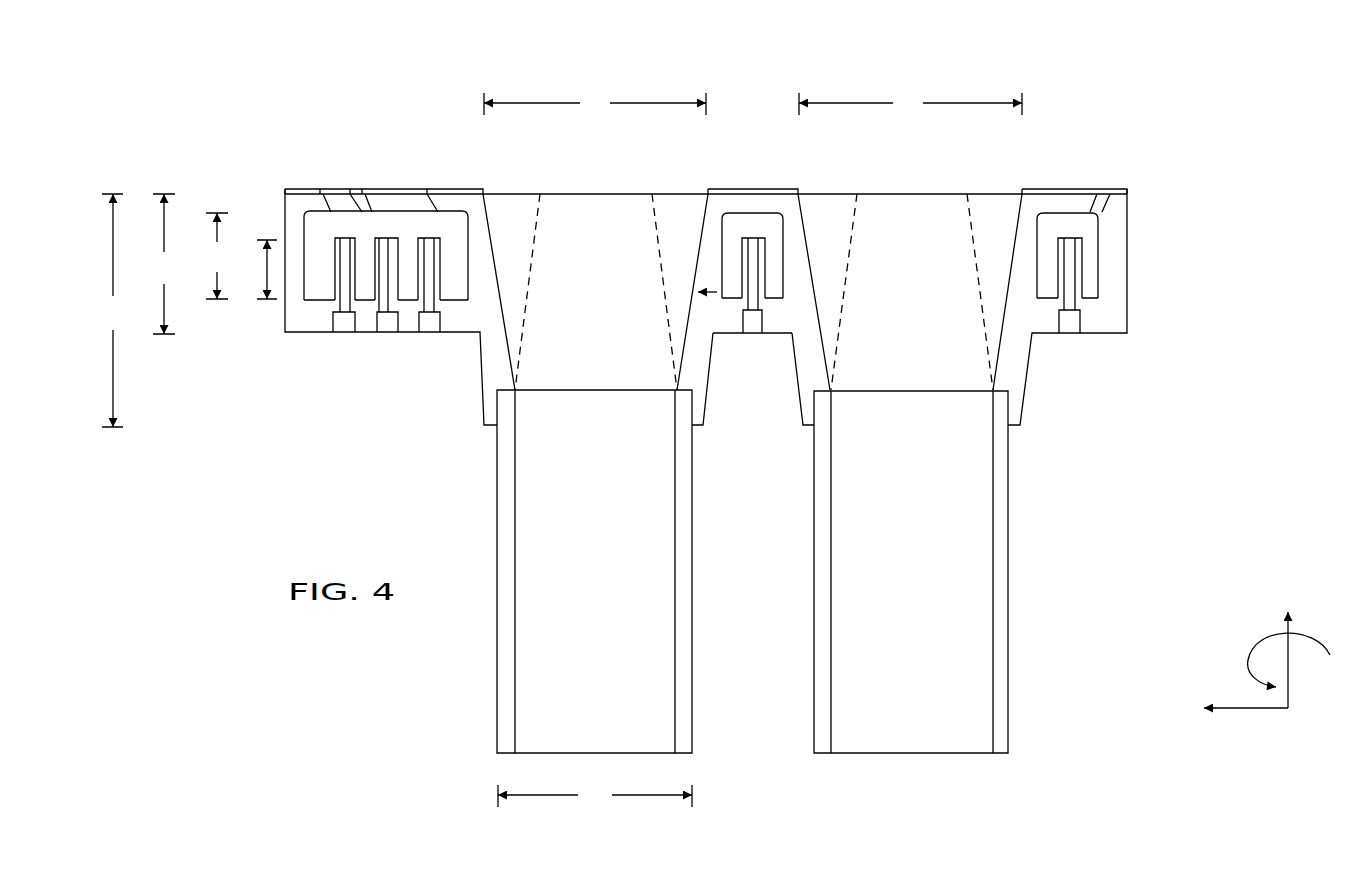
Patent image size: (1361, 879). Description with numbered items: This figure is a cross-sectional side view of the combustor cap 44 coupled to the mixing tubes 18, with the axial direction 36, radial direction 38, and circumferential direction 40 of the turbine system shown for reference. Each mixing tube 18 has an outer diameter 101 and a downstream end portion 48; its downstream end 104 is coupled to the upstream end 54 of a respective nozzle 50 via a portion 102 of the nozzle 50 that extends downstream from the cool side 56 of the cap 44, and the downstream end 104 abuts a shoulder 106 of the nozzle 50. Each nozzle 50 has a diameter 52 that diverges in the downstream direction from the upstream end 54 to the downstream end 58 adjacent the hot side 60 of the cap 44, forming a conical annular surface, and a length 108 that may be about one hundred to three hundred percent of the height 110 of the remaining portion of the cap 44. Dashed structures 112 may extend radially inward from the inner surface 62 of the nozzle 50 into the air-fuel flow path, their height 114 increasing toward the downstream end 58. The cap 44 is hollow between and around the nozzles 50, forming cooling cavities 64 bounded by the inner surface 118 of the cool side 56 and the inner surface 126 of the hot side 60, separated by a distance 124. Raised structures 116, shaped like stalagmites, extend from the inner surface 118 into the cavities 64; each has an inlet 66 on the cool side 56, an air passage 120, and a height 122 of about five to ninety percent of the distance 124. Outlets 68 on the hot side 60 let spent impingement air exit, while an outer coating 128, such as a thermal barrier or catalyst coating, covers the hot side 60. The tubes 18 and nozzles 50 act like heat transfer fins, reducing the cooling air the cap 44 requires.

The mixing tube 18 is at (694, 568).
The axial axis or direction 36 is at (1288, 665).
The radial axis or direction 38 is at (1250, 707).
The circumferential axis or direction 40 is at (1303, 637).
The combustor cap 44 is at (326, 76).
The downstream end portion 48 is at (516, 428).
The nozzle 50 is at (704, 213).
The diameter 52 is at (753, 103).
The upstream end 54 is at (516, 380).
The cool side 56 is at (1106, 334).
The downstream end 58 is at (485, 200).
The hot side 60 is at (383, 190).
The inner surface 62 is at (494, 248).
The cooling cavity 64 is at (308, 275).
The inlet 66 is at (440, 334).
The outlet 68 is at (348, 189).
The outer diameter 101 is at (595, 795).
The portion 102 is at (800, 401).
The downstream end 104 is at (676, 398).
The shoulder 106 is at (678, 386).
The length 108 is at (113, 310).
The length or height 110 is at (164, 264).
The structures 112 is at (650, 226).
The height 114 is at (657, 291).
The raised structures 116 is at (398, 236).
The inner surface 118 is at (335, 240).
The air passage 120 is at (336, 297).
The length or height 122 is at (266, 270).
The distance 124 is at (217, 256).
The inner surface 126 is at (305, 218).
The outer coating 128 is at (425, 189).